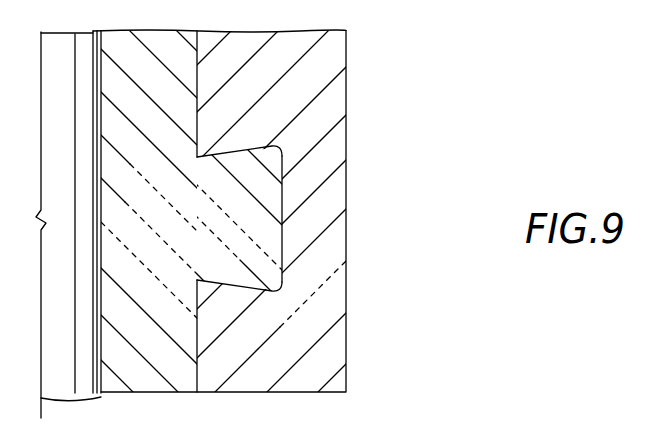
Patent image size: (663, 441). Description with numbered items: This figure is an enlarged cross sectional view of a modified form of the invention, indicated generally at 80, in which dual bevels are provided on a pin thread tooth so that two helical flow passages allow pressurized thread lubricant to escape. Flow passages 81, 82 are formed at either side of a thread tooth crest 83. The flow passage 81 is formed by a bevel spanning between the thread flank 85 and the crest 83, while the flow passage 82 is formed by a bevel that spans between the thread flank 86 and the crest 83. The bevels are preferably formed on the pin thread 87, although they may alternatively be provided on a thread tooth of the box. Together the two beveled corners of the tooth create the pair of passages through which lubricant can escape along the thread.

The modified form of the invention 80 is at (393, 80).
The flow passage 81 is at (282, 150).
The flow passage 82 is at (282, 291).
The thread tooth crest 83 is at (282, 190).
The thread flank 85 is at (240, 144).
The thread flank 86 is at (247, 288).
The pin thread 87 is at (248, 220).